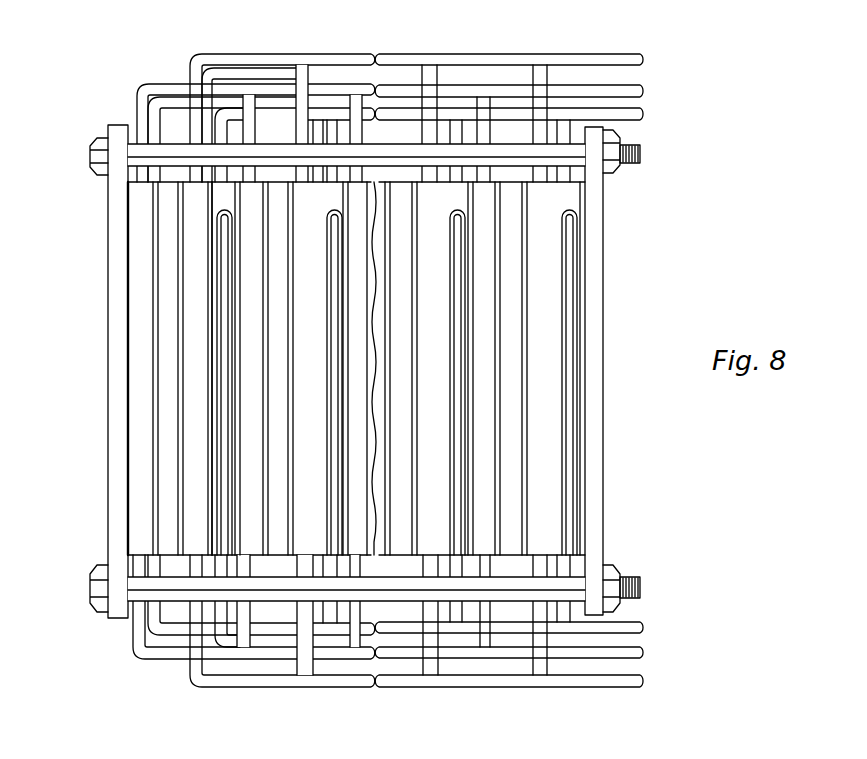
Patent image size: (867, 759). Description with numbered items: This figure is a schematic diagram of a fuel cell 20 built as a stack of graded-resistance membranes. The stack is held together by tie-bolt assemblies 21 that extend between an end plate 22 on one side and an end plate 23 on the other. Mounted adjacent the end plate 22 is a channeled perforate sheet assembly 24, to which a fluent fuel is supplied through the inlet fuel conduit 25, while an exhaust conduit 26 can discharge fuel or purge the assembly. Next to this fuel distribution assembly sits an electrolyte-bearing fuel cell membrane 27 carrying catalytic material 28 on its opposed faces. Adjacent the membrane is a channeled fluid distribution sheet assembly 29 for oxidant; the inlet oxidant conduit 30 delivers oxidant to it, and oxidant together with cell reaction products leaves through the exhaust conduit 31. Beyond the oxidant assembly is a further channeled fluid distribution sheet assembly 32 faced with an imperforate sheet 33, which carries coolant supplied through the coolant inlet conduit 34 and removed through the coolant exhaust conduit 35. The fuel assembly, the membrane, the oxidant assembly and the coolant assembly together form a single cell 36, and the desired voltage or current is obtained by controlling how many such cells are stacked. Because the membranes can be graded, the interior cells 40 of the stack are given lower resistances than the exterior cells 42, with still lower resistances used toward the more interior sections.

The fuel cell 20 is at (188, 64).
The tie-bolt assemblies 21 is at (630, 163).
The end plate 22 is at (113, 268).
The end plate 23 is at (593, 346).
The channeled perforate sheet assembly 24 is at (140, 302).
The inlet fuel conduit 25 is at (136, 98).
The exhaust conduit 26 is at (140, 655).
The fuel cell membrane 27 is at (168, 232).
The catalytic material 28 is at (182, 393).
The channeled fluid distribution sheet assembly 29 is at (193, 420).
The inlet oxidant conduit 30 is at (582, 55).
The exhaust conduit 31 is at (242, 687).
The channeled fluid distribution sheet assembly 32 is at (222, 190).
The imperforate sheet 33 is at (212, 333).
The coolant inlet conduit 34 is at (641, 96).
The coolant exhaust conduit 35 is at (646, 627).
The single cell 36 is at (343, 436).
The interior cells 40 is at (155, 482).
The exterior cells 42 is at (290, 528).